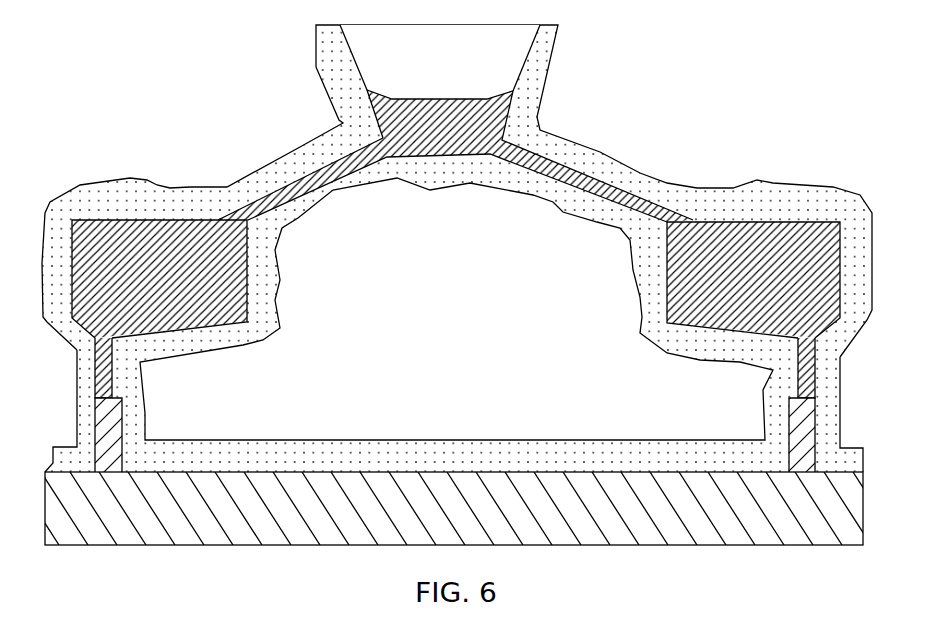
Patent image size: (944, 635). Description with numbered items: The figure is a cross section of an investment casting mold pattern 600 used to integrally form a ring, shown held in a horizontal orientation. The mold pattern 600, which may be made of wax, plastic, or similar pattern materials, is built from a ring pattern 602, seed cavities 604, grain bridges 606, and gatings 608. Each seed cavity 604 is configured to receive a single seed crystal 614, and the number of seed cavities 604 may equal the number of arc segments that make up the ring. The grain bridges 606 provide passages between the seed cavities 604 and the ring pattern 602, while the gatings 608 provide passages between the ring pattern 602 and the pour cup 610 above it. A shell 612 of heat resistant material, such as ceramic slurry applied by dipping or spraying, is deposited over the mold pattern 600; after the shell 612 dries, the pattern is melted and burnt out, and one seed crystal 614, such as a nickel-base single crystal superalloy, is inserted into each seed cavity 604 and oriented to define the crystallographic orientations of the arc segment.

The investment casting mold pattern 600 is at (187, 115).
The ring pattern 602 is at (247, 267).
The seed cavities 604 is at (122, 420).
The grain bridges 606 is at (113, 382).
The gatings 608 is at (323, 180).
The pour cup 610 is at (517, 82).
The shell 612 is at (155, 185).
The seed crystal 614 is at (102, 422).